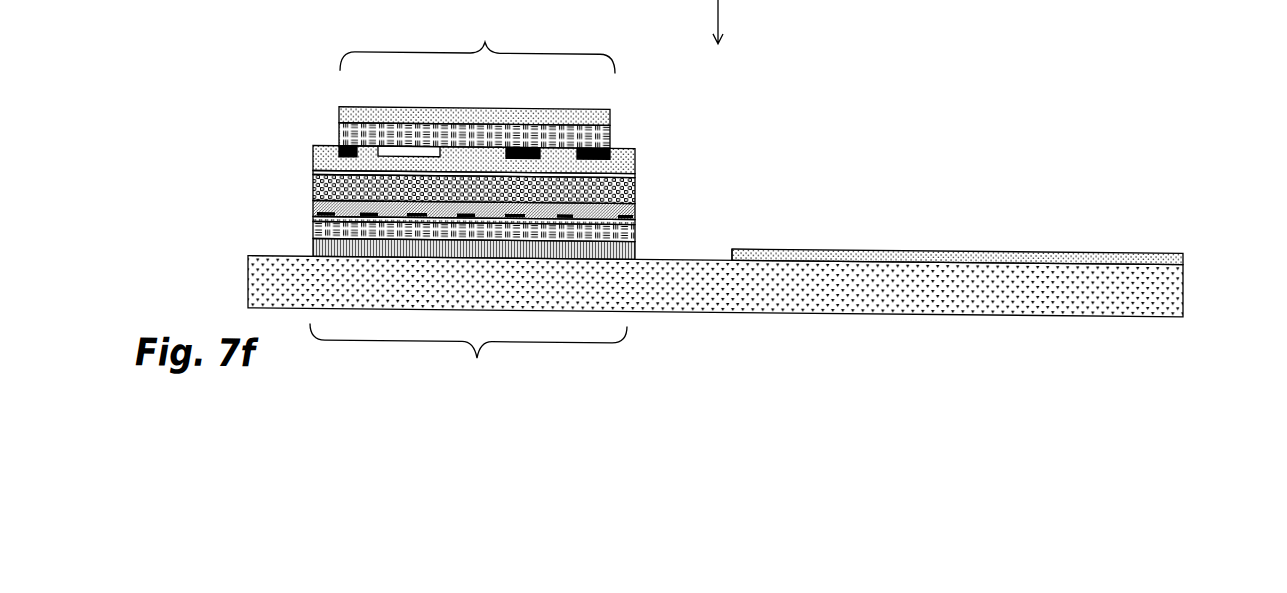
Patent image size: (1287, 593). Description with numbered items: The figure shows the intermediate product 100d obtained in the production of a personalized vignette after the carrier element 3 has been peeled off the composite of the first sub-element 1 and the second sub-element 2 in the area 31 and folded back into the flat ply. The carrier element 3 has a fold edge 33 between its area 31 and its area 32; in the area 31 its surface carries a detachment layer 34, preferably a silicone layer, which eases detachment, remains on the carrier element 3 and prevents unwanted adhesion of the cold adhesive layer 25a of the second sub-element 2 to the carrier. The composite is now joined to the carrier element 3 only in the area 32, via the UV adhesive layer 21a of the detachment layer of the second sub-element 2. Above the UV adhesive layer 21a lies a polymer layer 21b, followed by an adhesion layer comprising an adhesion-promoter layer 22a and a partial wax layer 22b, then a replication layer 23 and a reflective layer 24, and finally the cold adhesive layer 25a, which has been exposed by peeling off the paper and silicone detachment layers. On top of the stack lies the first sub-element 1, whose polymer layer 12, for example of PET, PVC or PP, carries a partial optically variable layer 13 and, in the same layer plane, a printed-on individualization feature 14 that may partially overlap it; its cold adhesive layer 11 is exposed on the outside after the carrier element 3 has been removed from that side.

The intermediate product 100d is at (911, 70).
The first sub-element 1 is at (455, 103).
The cold adhesive layer 11 is at (398, 114).
The polymer layer 12 is at (483, 133).
The partial optically variable layer 13 is at (422, 151).
The individualization feature 14 is at (353, 147).
The second sub-element 2 is at (516, 161).
The cold adhesive layer 25a is at (635, 157).
The reflective layer 24 is at (635, 169).
The replication layer 23 is at (635, 194).
The adhesion-promoter layer 22a is at (635, 206).
The partial wax layer 22b is at (635, 216).
The polymer layer 21b is at (635, 227).
The UV adhesive layer 21a is at (635, 249).
The carrier element 3 is at (1170, 249).
The area 31 is at (477, 41).
The area 32 is at (468, 356).
The fold edge 33 is at (714, 281).
The detachment layer 34 is at (1170, 249).